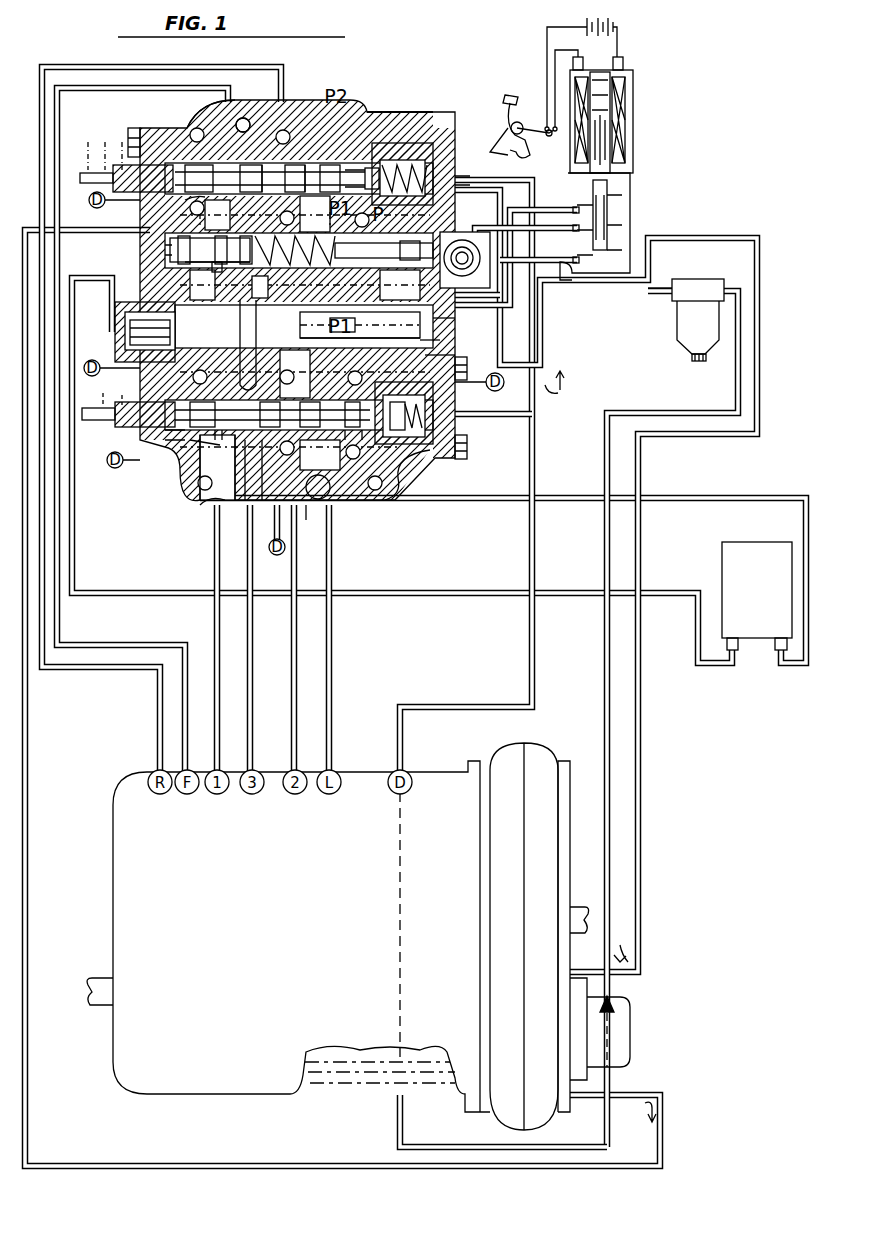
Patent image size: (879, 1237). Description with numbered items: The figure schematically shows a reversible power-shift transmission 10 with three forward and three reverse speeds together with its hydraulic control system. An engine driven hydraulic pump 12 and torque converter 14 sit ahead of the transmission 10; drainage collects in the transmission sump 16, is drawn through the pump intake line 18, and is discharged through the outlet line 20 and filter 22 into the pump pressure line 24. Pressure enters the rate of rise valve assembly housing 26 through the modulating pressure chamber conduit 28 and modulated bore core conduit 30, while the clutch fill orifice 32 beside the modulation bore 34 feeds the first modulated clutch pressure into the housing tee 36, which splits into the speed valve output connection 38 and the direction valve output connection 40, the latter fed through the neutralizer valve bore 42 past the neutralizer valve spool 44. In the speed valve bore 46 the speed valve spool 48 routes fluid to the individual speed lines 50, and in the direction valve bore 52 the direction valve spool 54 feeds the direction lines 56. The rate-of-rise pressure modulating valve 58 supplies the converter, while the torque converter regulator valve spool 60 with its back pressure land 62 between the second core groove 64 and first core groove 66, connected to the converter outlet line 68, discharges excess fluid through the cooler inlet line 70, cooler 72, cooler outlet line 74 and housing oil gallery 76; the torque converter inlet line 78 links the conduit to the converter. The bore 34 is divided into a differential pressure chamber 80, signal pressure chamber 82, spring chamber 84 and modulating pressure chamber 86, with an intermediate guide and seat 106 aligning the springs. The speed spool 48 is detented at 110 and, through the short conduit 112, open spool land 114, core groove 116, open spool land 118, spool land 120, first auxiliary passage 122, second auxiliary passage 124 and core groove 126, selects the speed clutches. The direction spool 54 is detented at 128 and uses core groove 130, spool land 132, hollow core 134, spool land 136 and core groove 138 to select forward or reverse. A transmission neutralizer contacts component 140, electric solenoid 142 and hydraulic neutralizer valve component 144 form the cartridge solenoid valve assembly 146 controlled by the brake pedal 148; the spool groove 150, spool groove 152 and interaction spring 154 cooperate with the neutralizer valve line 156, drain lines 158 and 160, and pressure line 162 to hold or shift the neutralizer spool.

The reversible power-shift transmission 10 is at (360, 768).
The hydraulic pump 12 is at (632, 1034).
The torque converter 14 is at (540, 755).
The transmission sump 16 is at (315, 1080).
The pump intake line 18 is at (608, 1116).
The outlet line 20 is at (614, 990).
The filter 22 is at (690, 330).
The pump pressure line 24 is at (648, 292).
The rate of rise valve assembly housing 26 is at (430, 458).
The modulating pressure chamber conduit 28 is at (462, 236).
The modulated bore core conduit 30 is at (346, 321).
The clutch fill orifice 32 is at (342, 256).
The rate of rise valve assembly modulation bore 34 is at (446, 321).
The housing tee 36 is at (266, 276).
The speed valve output connection 38 is at (442, 341).
The direction valve output connection 40 is at (360, 108).
The neutralizer valve bore 42 is at (402, 164).
The neutralizer valve spool 44 is at (468, 193).
The speed valve bore 46 is at (198, 482).
The speed valve spool 48 is at (333, 494).
The individual speed lines 50 is at (292, 614).
The direction valve bore 52 is at (248, 119).
The direction valve spool 54 is at (182, 123).
The individual direction lines 56 is at (258, 88).
The rate-of-rise pressure modulating valve 58 is at (505, 316).
The torque converter regulator valve spool 60 is at (180, 245).
The back pressure land 62 is at (185, 263).
The second core groove 64 is at (218, 270).
The first core groove 66 is at (170, 250).
The converter outlet line 68 is at (76, 1163).
The cooler inlet line 70 is at (458, 592).
The hydraulic torque converter cooler 72 is at (738, 560).
The cooler outlet line 74 is at (557, 496).
The housing oil gallery 76 is at (312, 515).
The torque converter inlet line 78 is at (750, 253).
The differential pressure chamber 80 is at (125, 322).
The signal pressure chamber 82 is at (132, 335).
The spring chamber 84 is at (252, 305).
The modulating pressure chamber 86 is at (442, 361).
The intermediate guide and seat 106 is at (360, 337).
The detent 110 is at (432, 427).
The short conduit 112 is at (130, 428).
The open spool land 114 is at (175, 432).
The core groove 116 is at (355, 443).
The open spool land 118 is at (245, 458).
The spool land 120 is at (200, 441).
The first auxiliary passage 122 is at (247, 411).
The second auxiliary passage 124 is at (222, 441).
The core groove 126 is at (212, 497).
The detent 128 is at (440, 118).
The core groove 130 is at (286, 165).
The spool land 132 is at (196, 166).
The hollow core 134 is at (162, 190).
The spool land 136 is at (297, 168).
The core groove 138 is at (312, 170).
The transmission neutralizer contacts component 140 is at (546, 126).
The electric neutralizer valve solenoid 142 is at (600, 148).
The hydraulic neutralizer valve component 144 is at (612, 258).
The three-way cartridge solenoid valve assembly 146 is at (641, 141).
The vehicle brake pedal 148 is at (505, 95).
The spool groove 150 is at (393, 238).
The spool groove 152 is at (605, 215).
The interaction spring 154 is at (202, 185).
The neutralizer valve line 156 is at (548, 229).
The drain line 158 is at (514, 198).
The drain line 160 is at (534, 658).
The pressure line 162 is at (578, 200).